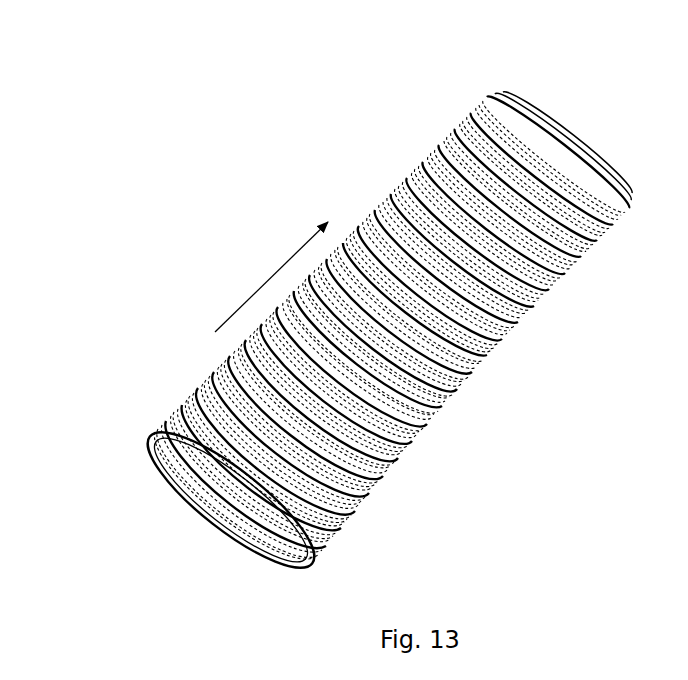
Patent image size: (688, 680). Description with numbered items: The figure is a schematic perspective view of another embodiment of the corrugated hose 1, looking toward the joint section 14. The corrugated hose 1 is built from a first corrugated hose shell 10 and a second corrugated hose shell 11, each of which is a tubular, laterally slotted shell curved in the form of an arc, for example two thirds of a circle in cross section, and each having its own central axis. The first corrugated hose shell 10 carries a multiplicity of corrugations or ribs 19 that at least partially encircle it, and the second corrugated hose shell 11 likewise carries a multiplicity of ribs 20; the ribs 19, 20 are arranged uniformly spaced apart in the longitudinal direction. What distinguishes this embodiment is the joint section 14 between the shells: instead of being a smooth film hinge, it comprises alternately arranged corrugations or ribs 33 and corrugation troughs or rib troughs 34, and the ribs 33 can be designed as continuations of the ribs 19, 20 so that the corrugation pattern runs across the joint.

The corrugated hose 1 is at (297, 150).
The first corrugated hose shell 10 is at (594, 258).
The second corrugated hose shell 11 is at (200, 380).
The joint section 14 is at (556, 133).
The ribs 19 is at (505, 341).
The ribs 20 is at (390, 192).
The ribs 33 is at (550, 137).
The rib troughs 34 is at (461, 122).